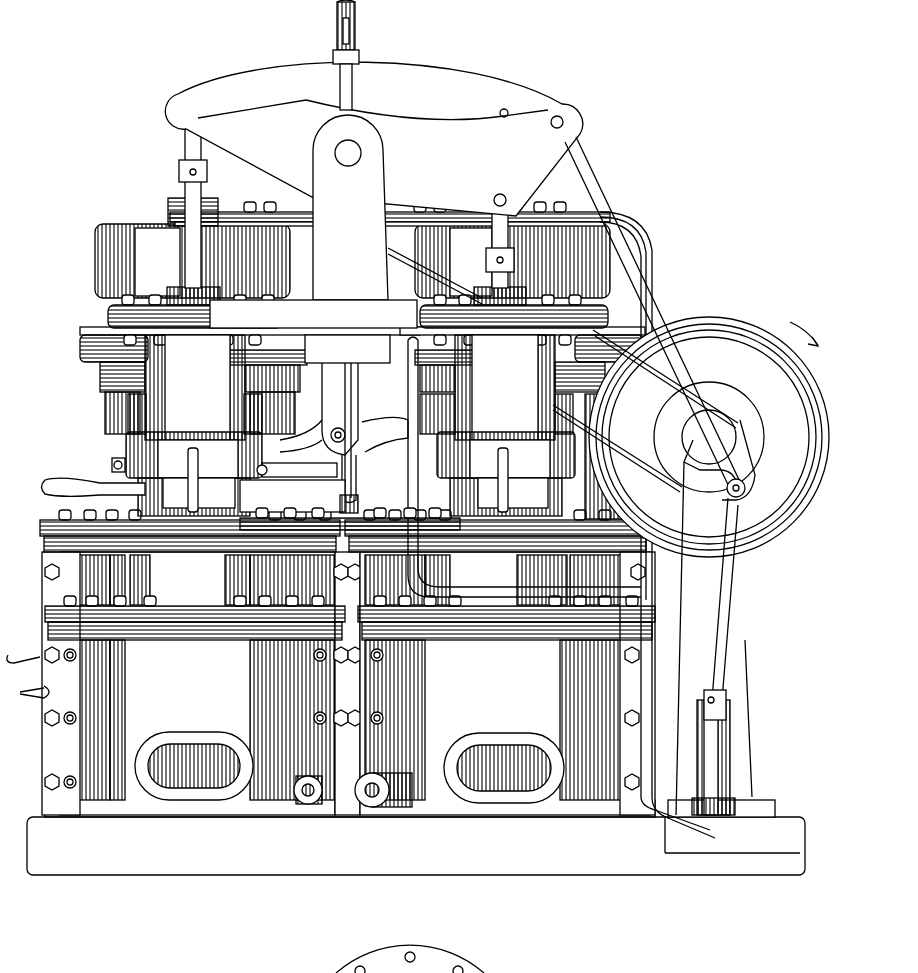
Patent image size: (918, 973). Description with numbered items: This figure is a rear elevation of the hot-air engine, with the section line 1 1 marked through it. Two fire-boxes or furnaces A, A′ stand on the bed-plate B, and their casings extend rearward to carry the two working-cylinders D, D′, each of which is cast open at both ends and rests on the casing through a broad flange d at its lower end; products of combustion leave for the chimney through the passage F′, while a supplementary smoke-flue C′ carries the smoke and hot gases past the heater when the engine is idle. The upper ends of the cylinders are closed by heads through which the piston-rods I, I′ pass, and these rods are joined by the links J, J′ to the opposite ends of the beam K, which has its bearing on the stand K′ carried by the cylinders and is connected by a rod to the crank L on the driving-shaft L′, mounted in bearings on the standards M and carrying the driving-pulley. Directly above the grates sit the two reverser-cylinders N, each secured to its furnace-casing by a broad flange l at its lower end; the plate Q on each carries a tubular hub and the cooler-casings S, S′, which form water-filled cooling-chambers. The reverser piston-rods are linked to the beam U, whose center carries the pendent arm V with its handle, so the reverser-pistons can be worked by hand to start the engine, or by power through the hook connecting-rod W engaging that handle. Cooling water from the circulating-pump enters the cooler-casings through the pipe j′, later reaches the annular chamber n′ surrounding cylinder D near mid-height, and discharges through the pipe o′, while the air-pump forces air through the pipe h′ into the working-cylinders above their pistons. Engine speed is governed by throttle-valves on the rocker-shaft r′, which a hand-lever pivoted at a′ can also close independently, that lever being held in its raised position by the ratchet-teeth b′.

The section line 1 is at (193, 890).
The fire-box A is at (188, 683).
The fire-box A′ is at (484, 683).
The bed-plate B is at (416, 837).
The supplementary smoke-flue C′ is at (353, 790).
The working-cylinder D is at (200, 387).
The working-cylinder D′ is at (522, 383).
The passage F′ is at (349, 767).
The piston-rod I is at (176, 263).
The piston-rod I′ is at (485, 267).
The link J is at (193, 197).
The link J′ is at (500, 248).
The beam K is at (373, 139).
The rod / stand K′ is at (419, 239).
The crank L is at (709, 441).
The driving-shaft L′ is at (645, 411).
The standard M is at (658, 476).
The reverser-cylinder N is at (368, 456).
The plate / cylinder-head Q is at (80, 346).
The cooler-casing S is at (192, 276).
The cooler-casing S′ is at (512, 276).
The beam U is at (373, 109).
The pendent arm V is at (340, 251).
The hook connecting-rod W is at (344, 434).
The pivot a′ is at (258, 483).
The ratchet-teeth b′ is at (108, 463).
The flange d is at (350, 618).
The pipe h′ is at (513, 608).
The pipe j′ is at (493, 510).
The flange l is at (55, 528).
The annular chamber n′ is at (194, 455).
The pipe o′ is at (194, 482).
The rocker-shaft r′ is at (350, 505).